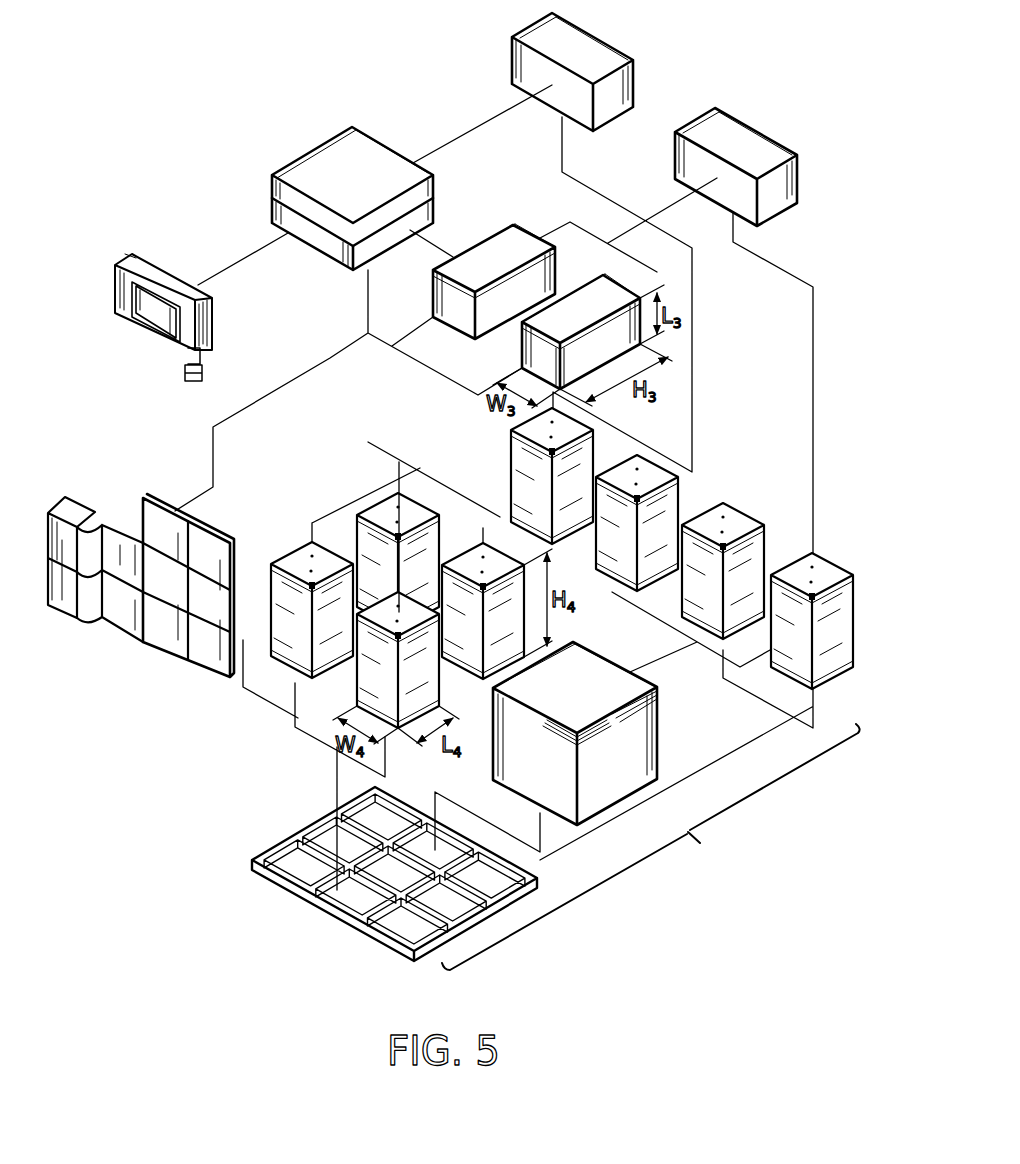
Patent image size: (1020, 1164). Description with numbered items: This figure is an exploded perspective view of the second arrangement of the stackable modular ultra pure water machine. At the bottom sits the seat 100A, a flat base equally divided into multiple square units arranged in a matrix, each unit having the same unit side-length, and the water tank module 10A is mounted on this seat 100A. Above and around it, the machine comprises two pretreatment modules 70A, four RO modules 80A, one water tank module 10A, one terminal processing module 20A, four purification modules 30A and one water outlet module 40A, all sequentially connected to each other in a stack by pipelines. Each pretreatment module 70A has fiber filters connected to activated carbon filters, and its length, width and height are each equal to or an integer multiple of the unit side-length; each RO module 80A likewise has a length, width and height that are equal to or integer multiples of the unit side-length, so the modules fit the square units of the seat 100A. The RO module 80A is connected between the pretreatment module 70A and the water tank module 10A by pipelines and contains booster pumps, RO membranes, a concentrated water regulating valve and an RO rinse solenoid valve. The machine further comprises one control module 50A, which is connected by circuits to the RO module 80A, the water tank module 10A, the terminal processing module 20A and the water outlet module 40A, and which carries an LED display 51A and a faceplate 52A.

The water tank module 10A is at (650, 733).
The terminal processing module 20A is at (281, 221).
The purification module 30A is at (826, 568).
The water outlet module 40A is at (183, 368).
The control module 50A is at (278, 189).
The LED display 51A is at (137, 295).
The faceplate 52A is at (138, 628).
The pretreatment module 70A is at (598, 358).
The RO module 80A is at (291, 672).
The seat 100A is at (346, 928).